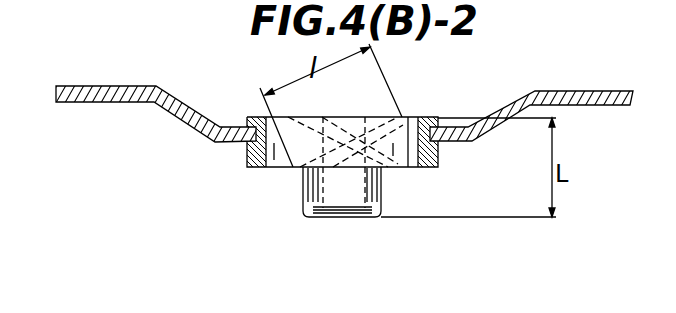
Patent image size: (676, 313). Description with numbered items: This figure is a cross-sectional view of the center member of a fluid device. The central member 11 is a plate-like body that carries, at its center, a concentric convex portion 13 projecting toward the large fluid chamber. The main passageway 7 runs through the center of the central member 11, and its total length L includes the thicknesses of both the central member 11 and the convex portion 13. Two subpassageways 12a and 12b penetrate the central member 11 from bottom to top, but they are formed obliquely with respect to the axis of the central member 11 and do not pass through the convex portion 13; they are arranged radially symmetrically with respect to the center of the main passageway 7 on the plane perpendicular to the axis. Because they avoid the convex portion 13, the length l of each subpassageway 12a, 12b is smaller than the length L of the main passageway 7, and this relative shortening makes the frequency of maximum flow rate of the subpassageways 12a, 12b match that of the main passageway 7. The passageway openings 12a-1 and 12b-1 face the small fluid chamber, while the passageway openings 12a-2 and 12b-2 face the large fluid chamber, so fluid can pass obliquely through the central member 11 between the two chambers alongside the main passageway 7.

The main passageway 7 is at (337, 117).
The central member 11 is at (437, 161).
The subpassageway 12a is at (388, 117).
The passageway opening 12a-1 is at (424, 116).
The passageway opening 12a-2 is at (256, 156).
The subpassageway 12b is at (342, 192).
The passageway opening 12b-1 is at (333, 117).
The passageway opening 12b-2 is at (393, 170).
The convex portion 13 is at (306, 207).